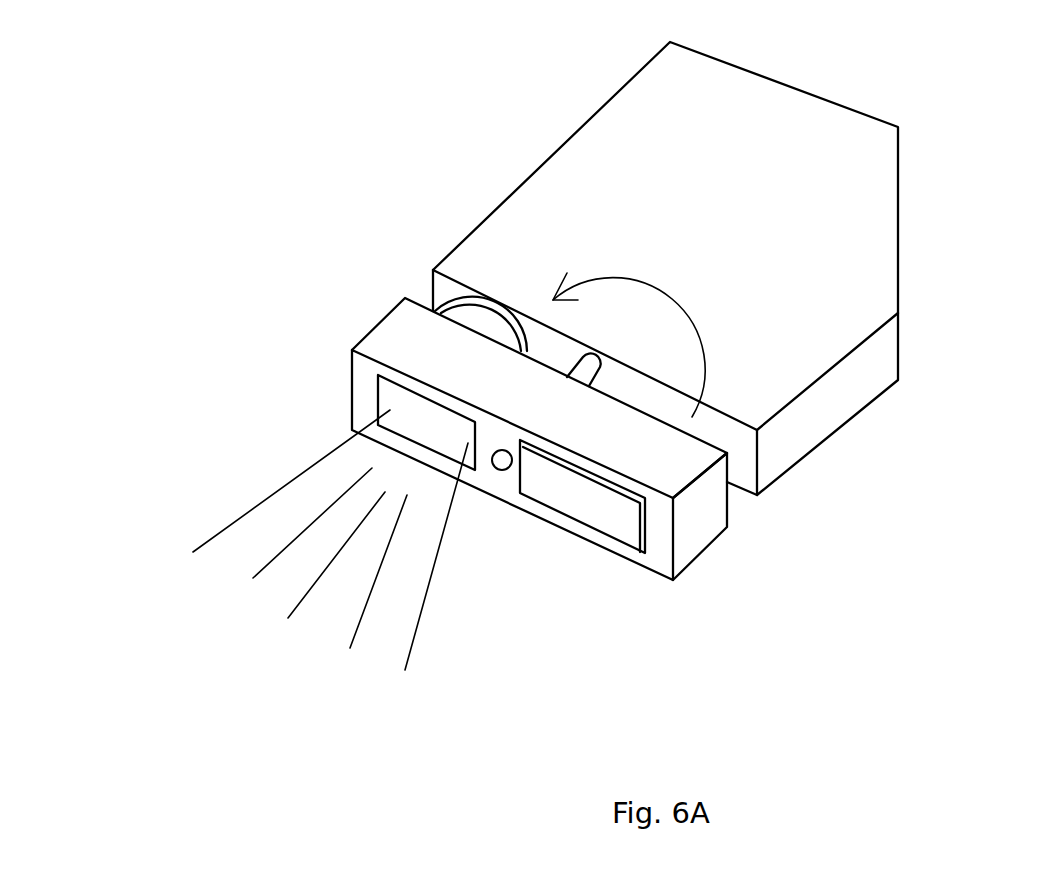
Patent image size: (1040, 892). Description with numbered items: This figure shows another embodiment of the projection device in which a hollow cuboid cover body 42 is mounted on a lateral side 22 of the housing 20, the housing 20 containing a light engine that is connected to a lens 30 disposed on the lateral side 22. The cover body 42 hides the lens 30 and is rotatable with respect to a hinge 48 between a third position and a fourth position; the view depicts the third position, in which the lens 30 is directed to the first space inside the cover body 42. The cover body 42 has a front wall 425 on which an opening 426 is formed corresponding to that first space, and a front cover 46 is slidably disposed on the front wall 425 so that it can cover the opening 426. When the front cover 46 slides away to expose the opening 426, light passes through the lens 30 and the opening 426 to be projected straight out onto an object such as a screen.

The housing 20 is at (832, 230).
The lateral side 22 is at (723, 431).
The lens 30 is at (431, 310).
The cover body 42 is at (703, 518).
The front wall 425 is at (660, 545).
The opening 426 is at (388, 399).
The front cover 46 is at (575, 500).
The hinge 48 is at (502, 471).